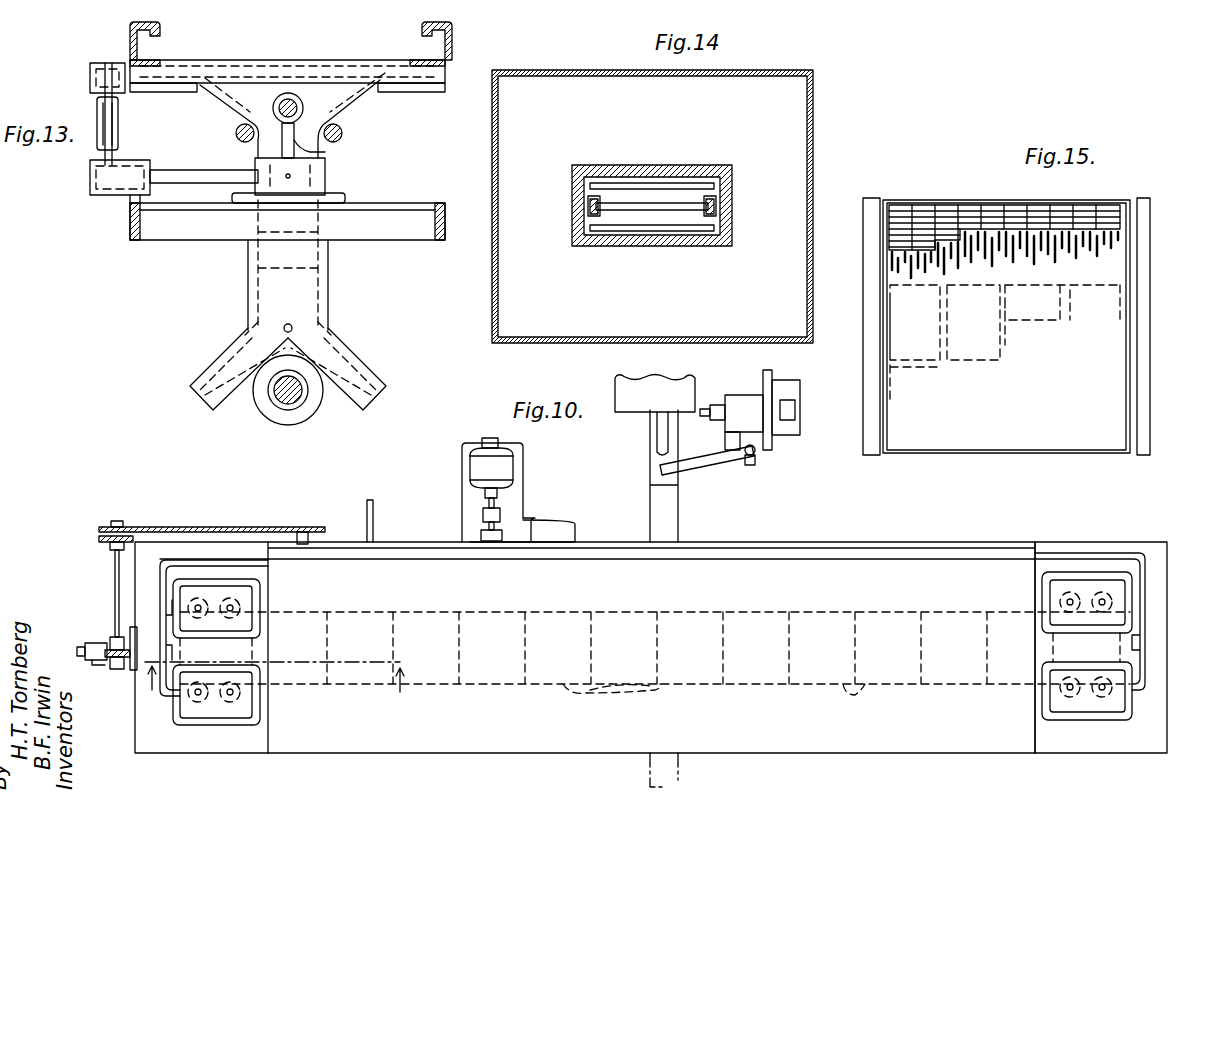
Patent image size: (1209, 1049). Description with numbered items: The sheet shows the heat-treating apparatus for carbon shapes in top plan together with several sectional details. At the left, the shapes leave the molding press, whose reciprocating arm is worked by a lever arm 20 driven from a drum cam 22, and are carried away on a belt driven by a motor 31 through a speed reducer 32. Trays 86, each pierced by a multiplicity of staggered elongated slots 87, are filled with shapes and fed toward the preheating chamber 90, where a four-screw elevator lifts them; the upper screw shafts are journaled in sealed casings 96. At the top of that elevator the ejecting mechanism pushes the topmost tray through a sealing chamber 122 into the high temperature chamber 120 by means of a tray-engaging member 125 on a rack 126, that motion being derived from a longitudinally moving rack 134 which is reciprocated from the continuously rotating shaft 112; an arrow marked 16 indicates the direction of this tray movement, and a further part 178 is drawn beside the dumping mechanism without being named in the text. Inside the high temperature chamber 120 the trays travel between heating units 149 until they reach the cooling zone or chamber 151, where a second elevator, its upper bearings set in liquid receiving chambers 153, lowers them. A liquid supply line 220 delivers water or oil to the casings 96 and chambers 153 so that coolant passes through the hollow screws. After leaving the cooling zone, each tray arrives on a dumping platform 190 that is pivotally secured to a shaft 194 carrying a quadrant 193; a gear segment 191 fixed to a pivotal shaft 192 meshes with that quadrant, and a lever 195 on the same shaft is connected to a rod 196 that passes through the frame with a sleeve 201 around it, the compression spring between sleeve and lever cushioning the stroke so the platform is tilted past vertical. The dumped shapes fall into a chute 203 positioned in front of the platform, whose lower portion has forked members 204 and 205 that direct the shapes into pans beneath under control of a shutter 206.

In FIG. 13, the dumping platform 190 is at (360, 60).
In FIG. 13, the shaft 194 is at (100, 90).
In FIG. 13, the quadrant 193 is at (100, 88).
In FIG. 13, the gear segment 191 is at (97, 135).
In FIG. 13, the pivotal shaft 192 is at (215, 160).
In FIG. 13, the chute 203 is at (222, 108).
In FIG. 13, the sleeve 201 is at (282, 100).
In FIG. 13, the rod 196 is at (290, 104).
In FIG. 13, the longitudinally moving rack 134 is at (236, 136).
In FIG. 13, the rod 178 is at (343, 133).
In FIG. 13, the lever 195 is at (305, 150).
In FIG. 13, the forked member 205 is at (228, 345).
In FIG. 13, the forked member 204 is at (355, 378).
In FIG. 13, the shutter 206 is at (290, 322).
In FIG. 13, the shaft 112 is at (275, 395).
In FIG. 14, the high temperature chamber 120 is at (800, 72).
In FIG. 10, the high temperature chamber 120 is at (735, 745).
In FIG. 14, the heating units 149 is at (640, 185).
In FIG. 14, the tray 86 is at (668, 212).
In FIG. 15, the tray 86 is at (900, 200).
In FIG. 10, the tray 86 is at (720, 707).
In FIG. 14, the elongated slots 87 is at (596, 200).
In FIG. 15, the elongated slots 87 is at (1140, 375).
In FIG. 14, the sealing chamber 122 is at (588, 212).
In FIG. 10, the preheating chamber 90 is at (233, 755).
In FIG. 10, the sealed casing 96 is at (182, 592).
In FIG. 10, the liquid receiving chamber 153 is at (1090, 586).
In FIG. 10, the cooling zone or chamber 151 is at (1085, 522).
In FIG. 10, the center line 16 is at (273, 692).
In FIG. 10, the rack 126 is at (157, 642).
In FIG. 10, the tray-engaging member 125 is at (160, 670).
In FIG. 10, the liquid supply line 220 is at (366, 505).
In FIG. 10, the motor 31 is at (480, 470).
In FIG. 10, the speed reducer 32 is at (530, 538).
In FIG. 10, the lever arm 20 is at (730, 388).
In FIG. 10, the drum cam 22 is at (700, 458).